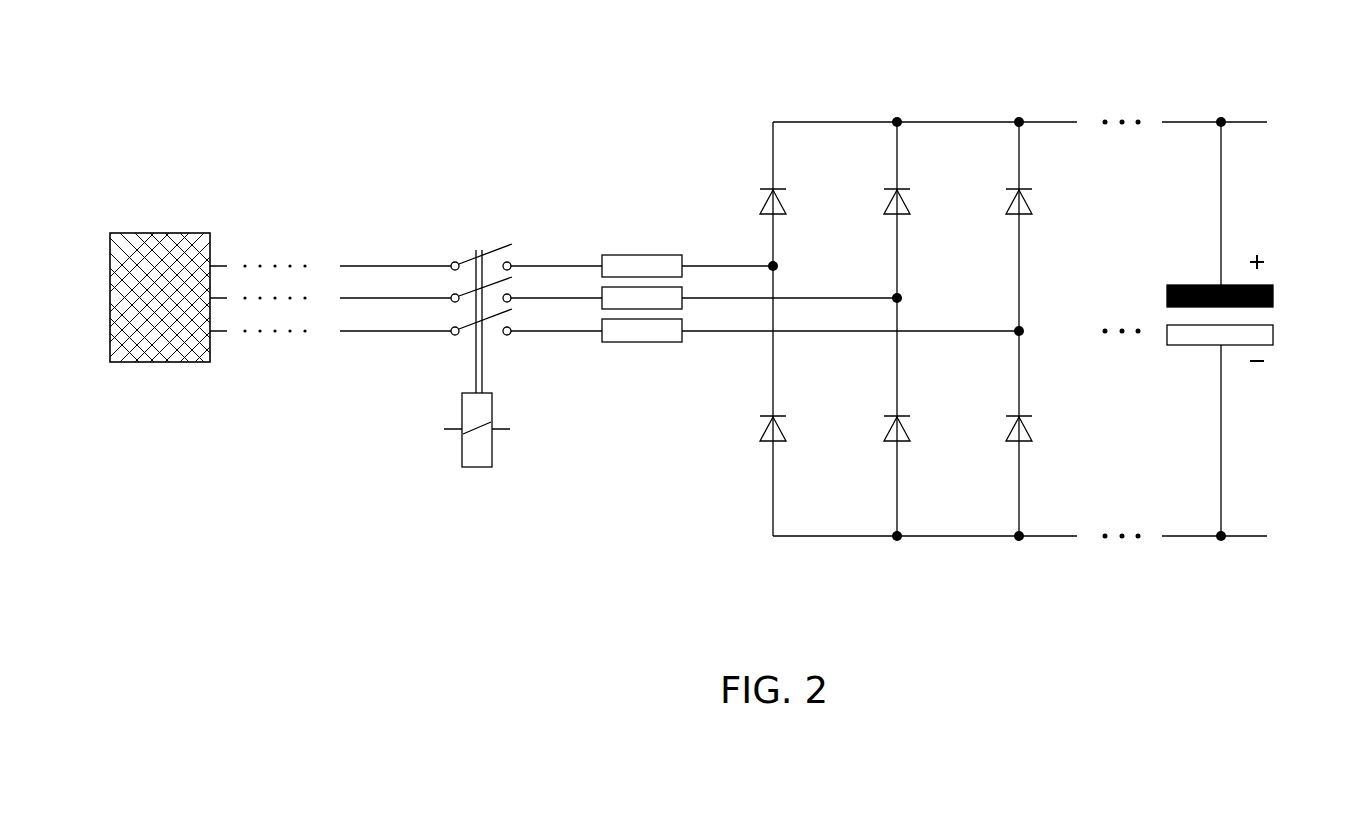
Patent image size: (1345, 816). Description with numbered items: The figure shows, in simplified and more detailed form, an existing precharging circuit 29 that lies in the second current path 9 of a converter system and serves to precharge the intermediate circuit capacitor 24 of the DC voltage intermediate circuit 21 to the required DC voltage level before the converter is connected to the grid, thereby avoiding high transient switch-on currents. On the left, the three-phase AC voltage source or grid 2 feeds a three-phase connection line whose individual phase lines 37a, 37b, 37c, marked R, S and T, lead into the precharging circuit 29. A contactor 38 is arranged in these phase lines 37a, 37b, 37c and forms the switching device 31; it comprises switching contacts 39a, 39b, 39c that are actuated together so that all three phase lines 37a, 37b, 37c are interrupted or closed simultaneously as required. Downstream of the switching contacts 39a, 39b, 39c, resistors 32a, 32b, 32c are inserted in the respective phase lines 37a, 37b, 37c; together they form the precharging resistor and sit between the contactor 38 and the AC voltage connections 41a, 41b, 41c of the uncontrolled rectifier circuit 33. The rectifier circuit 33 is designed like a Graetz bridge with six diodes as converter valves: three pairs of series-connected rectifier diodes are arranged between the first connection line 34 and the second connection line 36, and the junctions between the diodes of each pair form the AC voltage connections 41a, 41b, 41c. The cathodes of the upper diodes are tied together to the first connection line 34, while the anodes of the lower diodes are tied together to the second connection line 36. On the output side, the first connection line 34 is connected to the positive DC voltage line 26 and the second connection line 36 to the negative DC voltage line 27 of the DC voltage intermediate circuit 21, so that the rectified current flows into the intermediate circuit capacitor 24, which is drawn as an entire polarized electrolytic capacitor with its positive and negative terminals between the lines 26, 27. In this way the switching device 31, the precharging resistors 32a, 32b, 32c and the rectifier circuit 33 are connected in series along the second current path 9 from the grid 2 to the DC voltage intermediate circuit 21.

The three-phase AC voltage source 2 is at (178, 233).
The precharging circuit 29 is at (335, 165).
The second current path 9 is at (358, 243).
The phase line 37a is at (382, 262).
The phase line 37b is at (407, 300).
The phase line 37c is at (352, 334).
The switching device 31 is at (483, 245).
The switching contact 39a is at (462, 262).
The switching contact 39b is at (493, 280).
The switching contact 39c is at (462, 327).
The contactor 38 is at (477, 468).
The resistor 32a is at (624, 255).
The resistor 32b is at (660, 298).
The resistor 32c is at (624, 342).
The uncontrolled rectifier circuit 33 is at (833, 100).
The AC voltage connection 41a is at (780, 266).
The AC voltage connection 41b is at (903, 298).
The AC voltage connection 41c is at (1022, 326).
The first connection line 34 is at (1050, 120).
The second connection line 36 is at (1050, 540).
The DC voltage intermediate circuit 21 is at (1249, 331).
The positive DC voltage line 26 is at (1188, 120).
The intermediate circuit capacitor 24 is at (1268, 285).
The negative DC voltage line 27 is at (1244, 540).